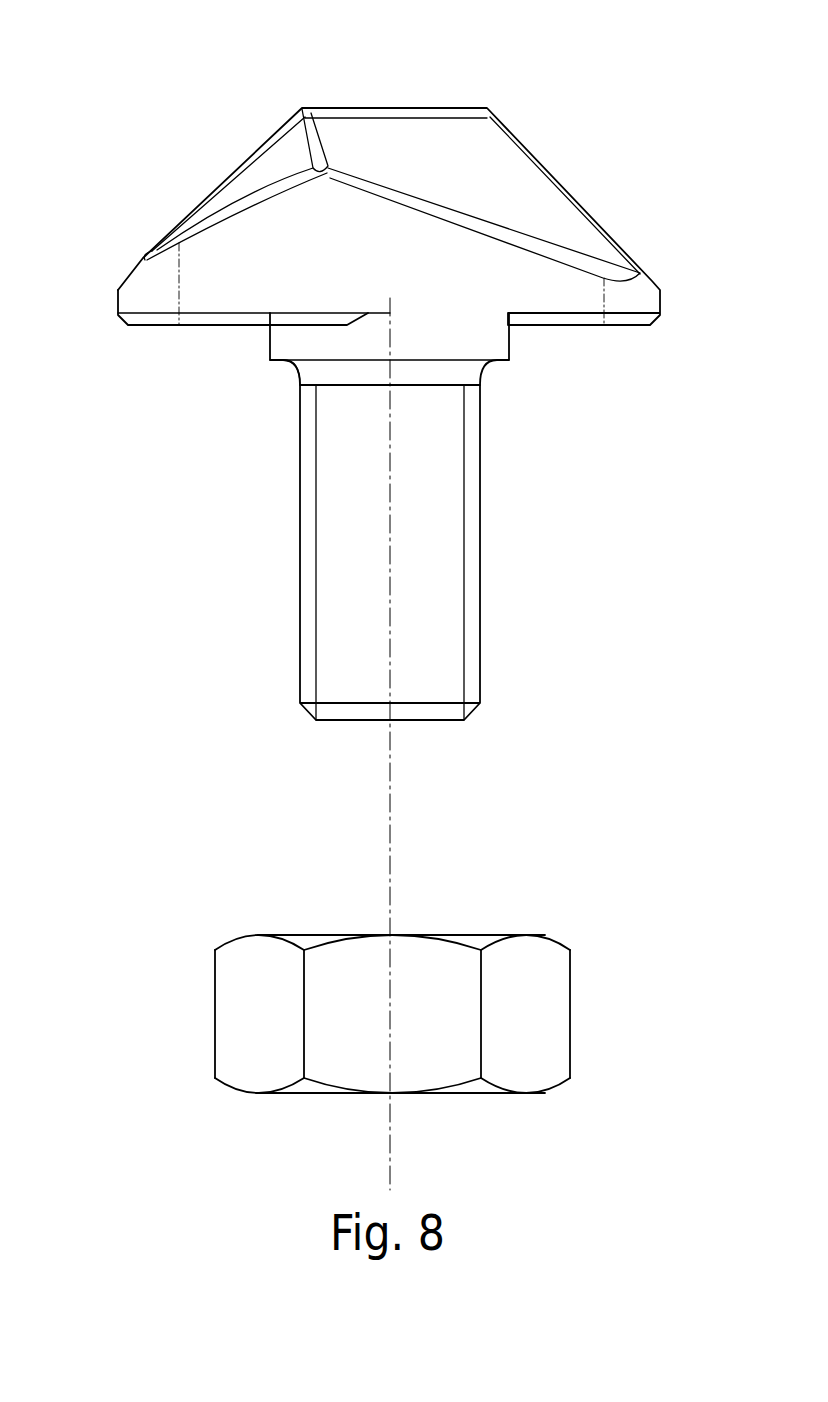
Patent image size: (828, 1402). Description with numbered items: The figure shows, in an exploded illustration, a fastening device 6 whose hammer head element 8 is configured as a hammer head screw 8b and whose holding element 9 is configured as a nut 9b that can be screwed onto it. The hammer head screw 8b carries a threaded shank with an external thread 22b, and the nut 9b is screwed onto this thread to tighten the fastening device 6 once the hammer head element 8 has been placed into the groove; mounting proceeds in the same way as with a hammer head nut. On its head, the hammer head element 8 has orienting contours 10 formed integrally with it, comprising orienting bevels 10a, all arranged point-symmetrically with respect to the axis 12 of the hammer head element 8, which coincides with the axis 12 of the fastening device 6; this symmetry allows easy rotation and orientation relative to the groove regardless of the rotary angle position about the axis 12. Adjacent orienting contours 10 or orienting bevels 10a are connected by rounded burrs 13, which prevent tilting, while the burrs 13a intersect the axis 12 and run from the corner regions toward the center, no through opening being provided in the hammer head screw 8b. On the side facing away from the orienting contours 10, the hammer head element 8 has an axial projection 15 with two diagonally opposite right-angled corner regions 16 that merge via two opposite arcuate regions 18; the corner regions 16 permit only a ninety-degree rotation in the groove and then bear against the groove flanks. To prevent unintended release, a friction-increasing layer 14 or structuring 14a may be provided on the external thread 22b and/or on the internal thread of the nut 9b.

The fastening device 6 is at (262, 90).
The hammer head element 8 is at (389, 170).
The hammer head screw 8b is at (350, 262).
The orienting contours 10 is at (397, 177).
The orienting bevels 10a is at (250, 178).
The rounded burrs 13 is at (339, 153).
The burrs intersecting the axis 13a is at (178, 208).
The axial projection 15 is at (512, 338).
The right-angled corner regions 16 is at (464, 371).
The arcuate regions 18 is at (302, 338).
The external thread 22b is at (326, 695).
The friction-increasing layer 14 is at (262, 695).
The structuring 14a is at (305, 610).
The axis 12 is at (390, 822).
The holding element 9 is at (432, 981).
The nut 9b is at (547, 958).